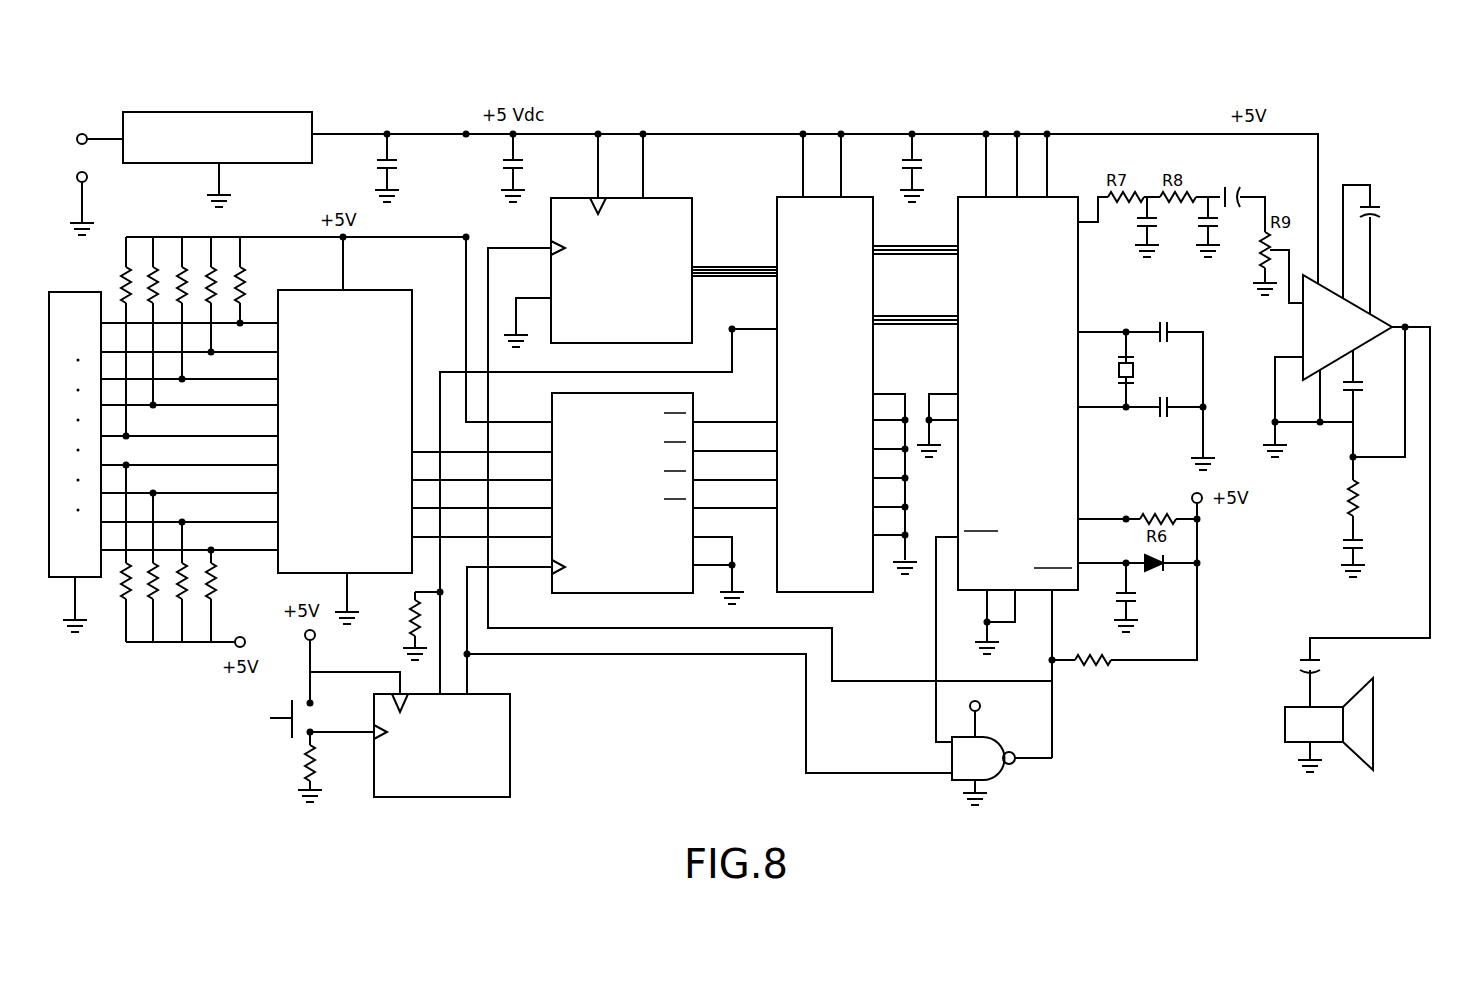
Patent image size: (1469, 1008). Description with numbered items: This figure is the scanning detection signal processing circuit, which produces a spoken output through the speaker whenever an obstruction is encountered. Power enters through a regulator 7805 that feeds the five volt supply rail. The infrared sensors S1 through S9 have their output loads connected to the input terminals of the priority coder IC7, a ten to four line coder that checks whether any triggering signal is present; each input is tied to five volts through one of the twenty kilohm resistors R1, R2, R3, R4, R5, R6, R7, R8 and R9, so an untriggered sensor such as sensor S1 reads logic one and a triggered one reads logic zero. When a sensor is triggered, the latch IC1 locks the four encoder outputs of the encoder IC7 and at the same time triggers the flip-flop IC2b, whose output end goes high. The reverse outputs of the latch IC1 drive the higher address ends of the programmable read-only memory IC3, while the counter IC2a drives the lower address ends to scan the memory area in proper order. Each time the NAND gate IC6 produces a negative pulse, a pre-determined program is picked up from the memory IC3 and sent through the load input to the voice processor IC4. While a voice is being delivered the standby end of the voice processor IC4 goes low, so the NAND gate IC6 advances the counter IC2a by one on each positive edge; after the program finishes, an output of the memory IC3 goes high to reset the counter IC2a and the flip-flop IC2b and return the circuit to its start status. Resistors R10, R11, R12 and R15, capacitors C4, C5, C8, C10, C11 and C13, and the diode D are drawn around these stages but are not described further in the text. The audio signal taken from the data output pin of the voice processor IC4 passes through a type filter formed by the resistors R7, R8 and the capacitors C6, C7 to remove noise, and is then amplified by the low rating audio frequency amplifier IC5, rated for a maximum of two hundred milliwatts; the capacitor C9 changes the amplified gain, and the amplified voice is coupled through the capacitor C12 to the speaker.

The voltage regulator 7805 is at (194, 159).
The resistor R1 is at (134, 336).
The resistor R2 is at (162, 321).
The resistor R3 is at (191, 308).
The resistor R4 is at (220, 294).
The resistor R5 is at (249, 280).
The resistor R6 is at (134, 553).
The resistor R7 is at (162, 567).
The resistor R8 is at (191, 582).
The resistor R9 is at (220, 596).
The resistor R10 is at (1370, 498).
The resistor R11 is at (410, 626).
The resistor R12 is at (323, 767).
The resistor R15 is at (1124, 675).
The infrared sensor S1 is at (74, 586).
The infrared sensor S9 is at (75, 434).
The latch IC1 is at (664, 498).
The counter IC2a is at (640, 240).
The flip-flop IC2b is at (442, 745).
The programmable read-only memory IC3 is at (867, 363).
The voice processor IC4 is at (997, 446).
The amplifier IC5 is at (1346, 467).
The NAND gate IC6 is at (1002, 750).
The priority coder IC7 is at (345, 457).
The capacitor C4 is at (1175, 415).
The capacitor C5 is at (1173, 322).
The capacitor C6 is at (1135, 227).
The capacitor C7 is at (1219, 227).
The capacitor C8 is at (1235, 187).
The capacitor C9 is at (1373, 249).
The capacitor C10 is at (1372, 403).
The capacitor C11 is at (1332, 555).
The capacitor C12 is at (1287, 672).
The capacitor C13 is at (1142, 597).
The diode D is at (1162, 573).